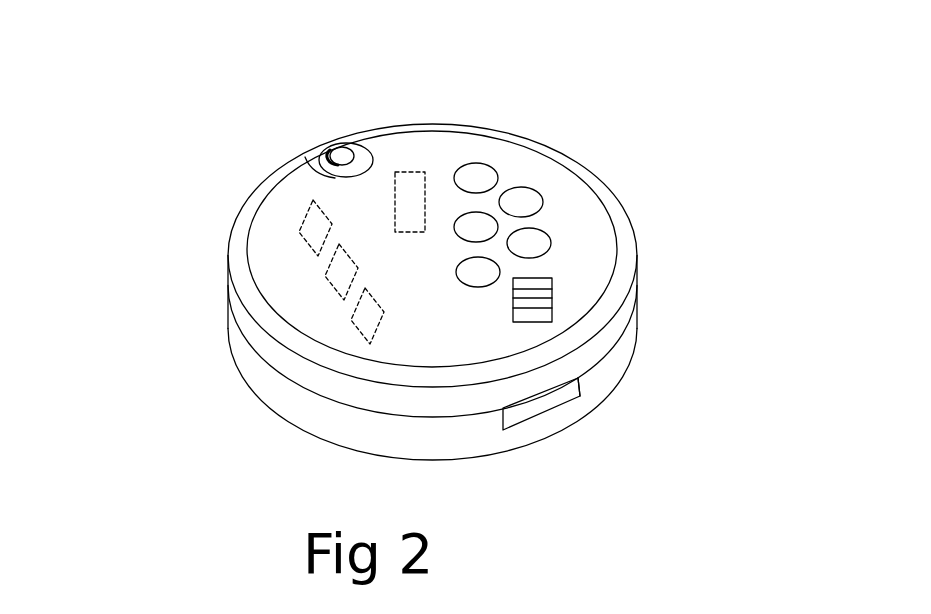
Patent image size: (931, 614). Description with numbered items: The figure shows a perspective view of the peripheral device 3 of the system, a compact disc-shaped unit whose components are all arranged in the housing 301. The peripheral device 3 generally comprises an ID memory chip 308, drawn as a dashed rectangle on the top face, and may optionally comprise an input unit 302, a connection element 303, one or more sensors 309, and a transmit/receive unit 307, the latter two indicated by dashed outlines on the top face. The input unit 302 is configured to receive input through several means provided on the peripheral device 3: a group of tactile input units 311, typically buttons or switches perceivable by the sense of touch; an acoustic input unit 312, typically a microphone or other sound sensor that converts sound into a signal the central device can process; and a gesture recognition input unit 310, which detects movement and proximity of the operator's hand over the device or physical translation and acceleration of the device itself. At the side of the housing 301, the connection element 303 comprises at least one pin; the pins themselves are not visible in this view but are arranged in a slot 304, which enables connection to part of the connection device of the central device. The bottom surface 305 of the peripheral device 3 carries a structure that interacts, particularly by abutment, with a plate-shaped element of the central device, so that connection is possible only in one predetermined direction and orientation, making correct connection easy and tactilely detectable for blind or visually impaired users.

The peripheral device 3 is at (597, 128).
The housing 301 is at (622, 223).
The input unit 302 is at (587, 253).
The connection element 303 is at (543, 407).
The slot 304 is at (580, 385).
The bottom surface 305 is at (433, 460).
The transmit/receive unit 307 is at (300, 232).
The ID memory chip 308 is at (420, 172).
The sensors 309 is at (336, 289).
The gesture recognition input unit 310 is at (363, 330).
The tactile input units 311 is at (528, 195).
The acoustic input unit 312 is at (552, 287).